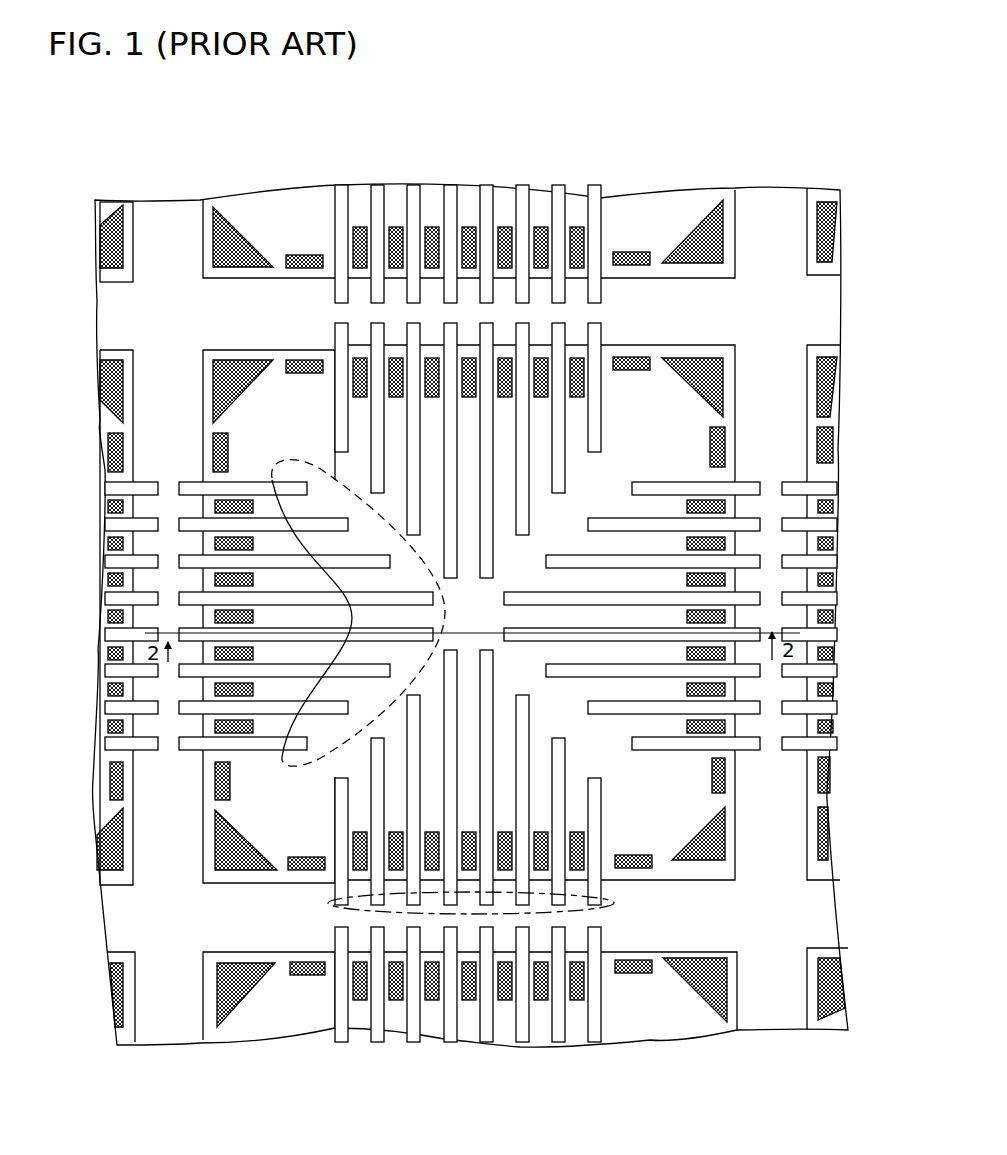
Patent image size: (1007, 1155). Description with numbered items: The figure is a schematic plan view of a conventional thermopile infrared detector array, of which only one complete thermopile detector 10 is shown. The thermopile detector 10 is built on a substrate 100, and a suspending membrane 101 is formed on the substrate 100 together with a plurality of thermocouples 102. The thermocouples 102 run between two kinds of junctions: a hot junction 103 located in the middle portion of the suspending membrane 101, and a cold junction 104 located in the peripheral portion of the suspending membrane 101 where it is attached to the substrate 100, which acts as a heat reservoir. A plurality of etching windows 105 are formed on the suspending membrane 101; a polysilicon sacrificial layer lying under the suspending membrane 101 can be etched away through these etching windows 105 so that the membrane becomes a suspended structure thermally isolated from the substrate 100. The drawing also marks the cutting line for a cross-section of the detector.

The thermopile detector 10 is at (743, 360).
The substrate 100 is at (155, 224).
The suspending membrane 101 is at (655, 407).
The thermocouples 102 is at (747, 556).
The hot junction 103 is at (310, 685).
The cold junction 104 is at (475, 914).
The etching windows 105 is at (725, 830).